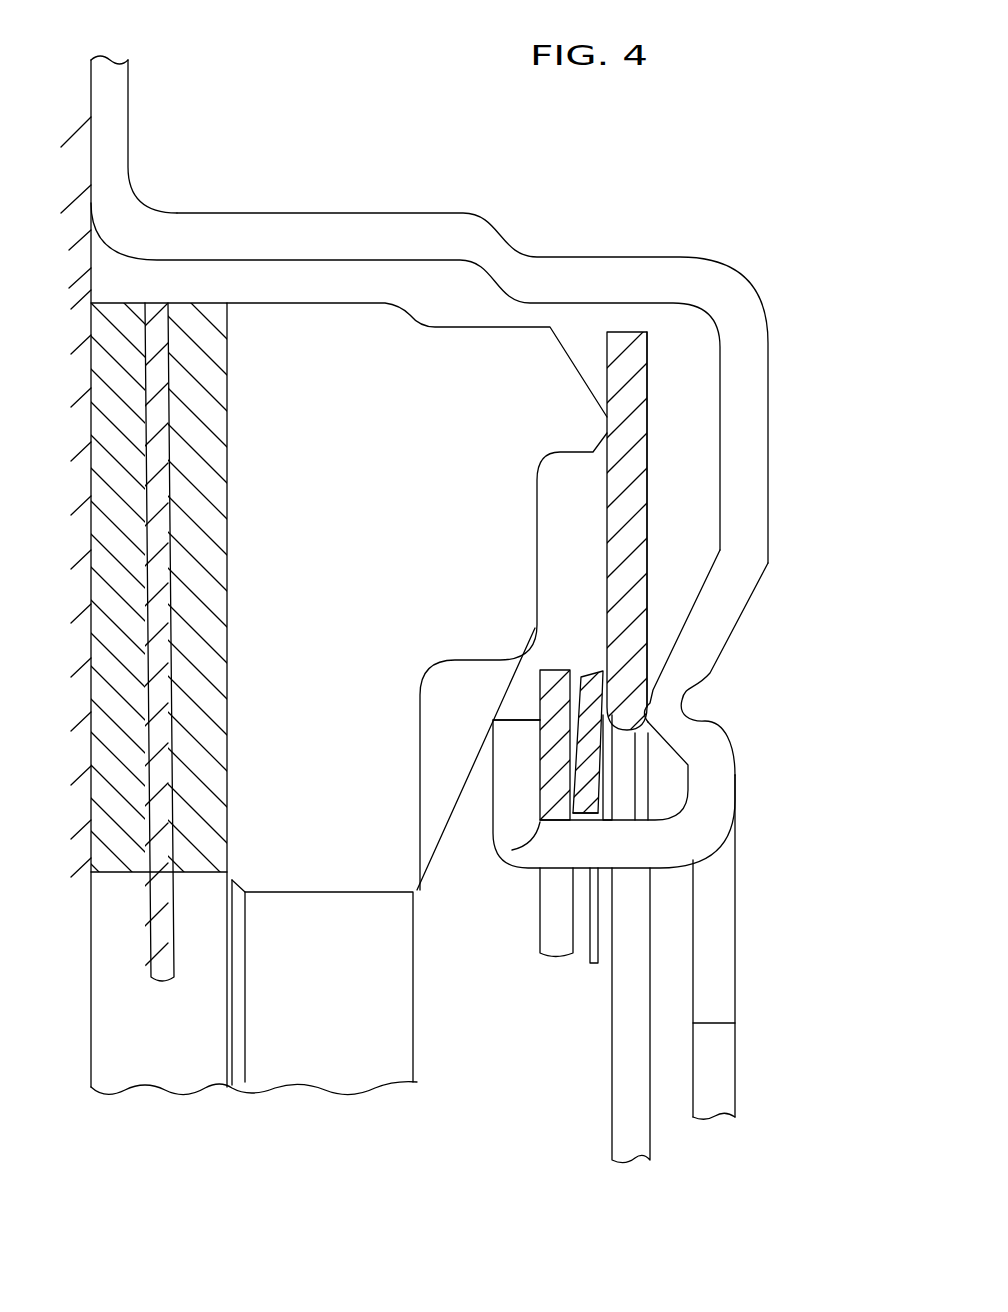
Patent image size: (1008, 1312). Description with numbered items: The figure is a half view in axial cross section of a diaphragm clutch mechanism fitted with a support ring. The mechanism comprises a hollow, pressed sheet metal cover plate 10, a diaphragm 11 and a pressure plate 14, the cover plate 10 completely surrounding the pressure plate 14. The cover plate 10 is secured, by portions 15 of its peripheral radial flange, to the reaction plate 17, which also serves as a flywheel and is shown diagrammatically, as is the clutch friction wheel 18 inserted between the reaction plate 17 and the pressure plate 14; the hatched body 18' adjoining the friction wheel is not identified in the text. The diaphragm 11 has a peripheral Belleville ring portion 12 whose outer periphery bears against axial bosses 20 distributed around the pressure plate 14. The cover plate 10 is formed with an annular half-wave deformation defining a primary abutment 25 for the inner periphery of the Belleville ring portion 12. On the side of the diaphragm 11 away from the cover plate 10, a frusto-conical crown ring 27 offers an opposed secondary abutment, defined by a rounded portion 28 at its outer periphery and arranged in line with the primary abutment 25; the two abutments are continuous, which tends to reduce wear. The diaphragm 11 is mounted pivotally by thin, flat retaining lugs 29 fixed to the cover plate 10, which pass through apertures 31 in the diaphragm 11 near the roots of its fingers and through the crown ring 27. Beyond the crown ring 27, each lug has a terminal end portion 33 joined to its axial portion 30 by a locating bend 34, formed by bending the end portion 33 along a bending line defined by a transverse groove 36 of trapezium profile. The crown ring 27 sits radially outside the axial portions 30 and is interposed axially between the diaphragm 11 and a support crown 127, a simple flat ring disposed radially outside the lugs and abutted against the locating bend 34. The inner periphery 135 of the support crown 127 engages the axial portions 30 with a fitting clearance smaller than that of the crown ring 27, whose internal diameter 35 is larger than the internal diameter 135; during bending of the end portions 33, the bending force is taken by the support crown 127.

The cover plate 10 is at (296, 205).
The diaphragm 11 is at (688, 332).
The Belleville ring portion 12 is at (650, 490).
The pressure plate 14 is at (368, 303).
The portions of the peripheral radial flange 15 is at (128, 112).
The reaction plate 17 is at (74, 278).
The clutch friction wheel 18 is at (181, 664).
The hatched body portion 18' is at (159, 596).
The axial bosses 20 is at (575, 418).
The primary abutment 25 is at (684, 707).
The crown ring 27 is at (590, 668).
The rounded portion 28 is at (613, 667).
The retaining lugs 29 is at (670, 874).
The axial portion 30 is at (627, 873).
The apertures 31 is at (638, 737).
The terminal end portion 33 is at (493, 790).
The locating bend 34 is at (512, 853).
The internal diameter of the crown ring 35 is at (582, 823).
The transverse groove 36 is at (540, 820).
The support crown 127 is at (537, 697).
The inner periphery of the support crown 135 is at (545, 830).